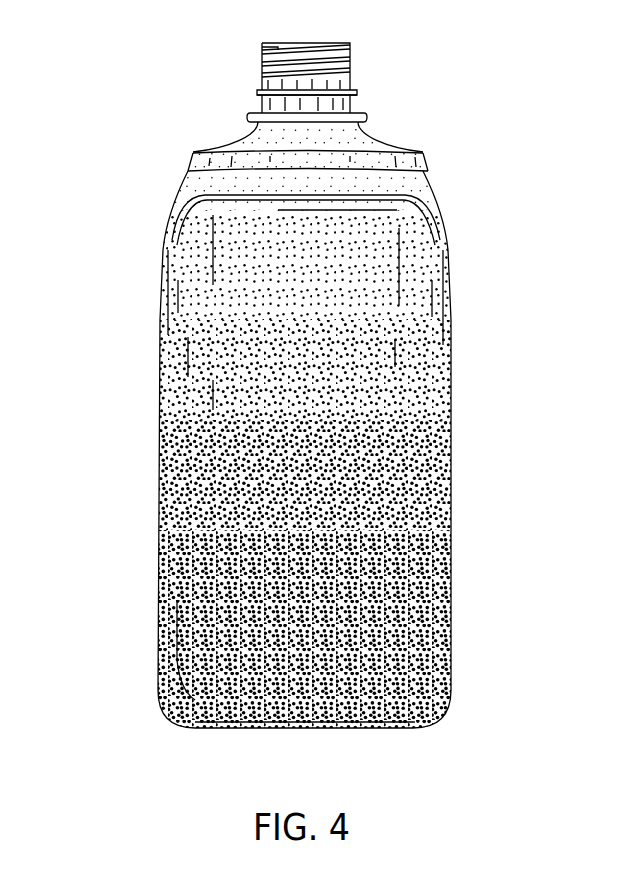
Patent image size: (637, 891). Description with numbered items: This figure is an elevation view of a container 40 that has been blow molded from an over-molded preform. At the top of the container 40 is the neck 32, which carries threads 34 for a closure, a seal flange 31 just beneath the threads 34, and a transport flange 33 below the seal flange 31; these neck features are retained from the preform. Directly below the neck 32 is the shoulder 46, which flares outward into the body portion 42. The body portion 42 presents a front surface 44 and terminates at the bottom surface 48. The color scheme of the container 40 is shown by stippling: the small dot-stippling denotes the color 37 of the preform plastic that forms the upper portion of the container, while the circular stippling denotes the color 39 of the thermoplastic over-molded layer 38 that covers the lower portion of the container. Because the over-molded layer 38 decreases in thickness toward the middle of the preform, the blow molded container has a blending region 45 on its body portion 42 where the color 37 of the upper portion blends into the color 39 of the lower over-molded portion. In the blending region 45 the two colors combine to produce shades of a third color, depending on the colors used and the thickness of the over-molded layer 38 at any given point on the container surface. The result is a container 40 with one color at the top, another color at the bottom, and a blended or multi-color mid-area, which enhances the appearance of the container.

The seal flange 31 is at (258, 93).
The neck 32 is at (352, 107).
The transport flange 33 is at (248, 118).
The threads 34 is at (352, 56).
The color of the preform plastic 37 is at (186, 250).
The over-molded thermoplastic layer 38 is at (451, 440).
The color of the over-molded thermoplastic layer 39 is at (186, 666).
The container 40 is at (317, 385).
The body portion 42 is at (451, 259).
The front surface 44 is at (319, 255).
The blending region 45 is at (150, 313).
The shoulder 46 is at (192, 153).
The bottom surface 48 is at (432, 723).